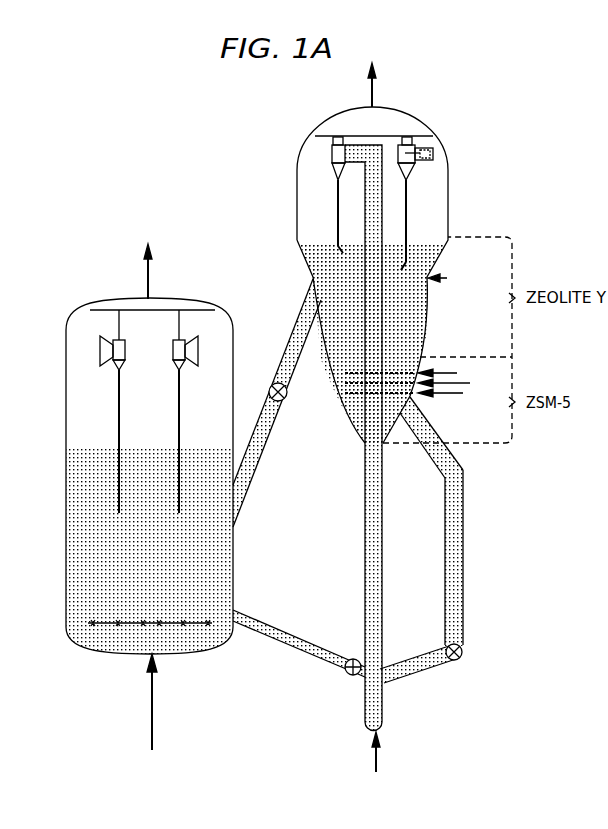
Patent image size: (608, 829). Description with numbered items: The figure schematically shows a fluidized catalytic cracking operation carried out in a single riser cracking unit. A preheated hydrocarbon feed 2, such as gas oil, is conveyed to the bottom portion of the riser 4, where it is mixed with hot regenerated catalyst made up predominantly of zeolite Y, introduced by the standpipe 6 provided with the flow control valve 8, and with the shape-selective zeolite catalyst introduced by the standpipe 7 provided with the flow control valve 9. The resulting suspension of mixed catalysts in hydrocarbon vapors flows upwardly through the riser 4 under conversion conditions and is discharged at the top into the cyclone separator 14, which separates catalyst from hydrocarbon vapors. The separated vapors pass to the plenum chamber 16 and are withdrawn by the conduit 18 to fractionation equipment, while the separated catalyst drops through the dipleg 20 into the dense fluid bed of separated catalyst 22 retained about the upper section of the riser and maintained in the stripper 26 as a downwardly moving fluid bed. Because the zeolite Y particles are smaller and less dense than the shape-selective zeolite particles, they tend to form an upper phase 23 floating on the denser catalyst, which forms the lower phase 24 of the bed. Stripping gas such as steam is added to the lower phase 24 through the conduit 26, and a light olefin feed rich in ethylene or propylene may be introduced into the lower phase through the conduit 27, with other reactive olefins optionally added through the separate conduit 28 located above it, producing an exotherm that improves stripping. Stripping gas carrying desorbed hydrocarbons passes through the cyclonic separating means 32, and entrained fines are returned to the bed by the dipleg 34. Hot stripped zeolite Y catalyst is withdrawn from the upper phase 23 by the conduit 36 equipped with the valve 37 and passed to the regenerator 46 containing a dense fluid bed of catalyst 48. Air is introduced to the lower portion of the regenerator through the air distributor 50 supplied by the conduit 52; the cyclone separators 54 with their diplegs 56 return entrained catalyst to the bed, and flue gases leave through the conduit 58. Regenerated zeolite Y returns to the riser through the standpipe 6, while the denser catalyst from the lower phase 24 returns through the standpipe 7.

The hydrocarbon feed 2 is at (378, 760).
The riser 4 is at (383, 587).
The standpipe 6 is at (291, 634).
The standpipe 7 is at (426, 654).
The flow control valve 8 is at (350, 677).
The flow control valve 9 is at (462, 656).
The cyclone separator 14 is at (332, 153).
The plenum chamber 16 is at (399, 118).
The conduit 18 is at (370, 90).
The dipleg 20 is at (337, 197).
The dense fluid bed of separated catalyst 22 is at (395, 252).
The upper phase 23 is at (403, 306).
The lower phase 24 is at (403, 358).
The stripper 26 is at (456, 395).
The conduit 27 is at (470, 383).
The separate conduit 28 is at (457, 373).
The cyclonic separating means 32 is at (433, 152).
The dipleg 34 is at (408, 197).
The conduit 36 is at (294, 352).
The valve 37 is at (270, 386).
The regenerator 46 is at (66, 402).
The dense fluid bed of catalyst 48 is at (105, 554).
The air distributor 50 is at (106, 625).
The conduit 52 is at (153, 693).
The cyclone separators 54 is at (171, 351).
The diplegs 56 is at (178, 413).
The conduit 58 is at (150, 273).